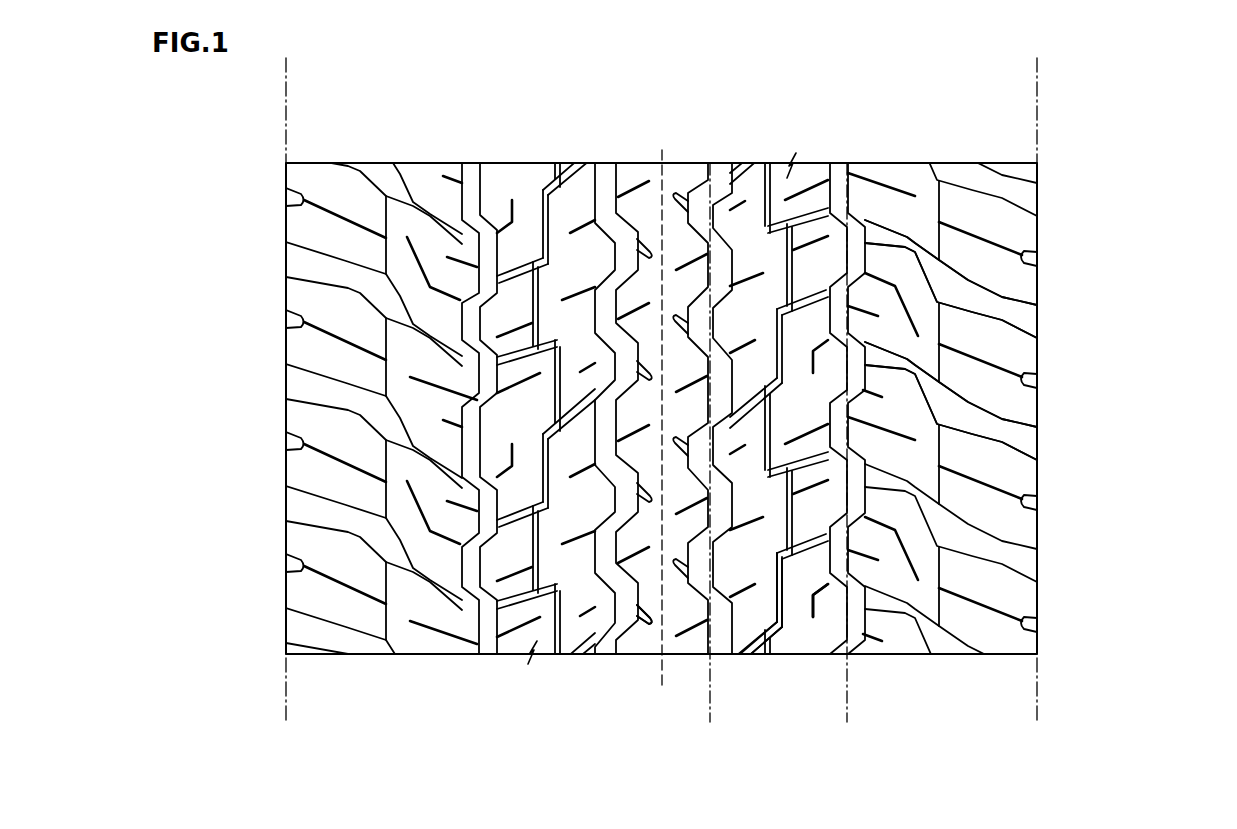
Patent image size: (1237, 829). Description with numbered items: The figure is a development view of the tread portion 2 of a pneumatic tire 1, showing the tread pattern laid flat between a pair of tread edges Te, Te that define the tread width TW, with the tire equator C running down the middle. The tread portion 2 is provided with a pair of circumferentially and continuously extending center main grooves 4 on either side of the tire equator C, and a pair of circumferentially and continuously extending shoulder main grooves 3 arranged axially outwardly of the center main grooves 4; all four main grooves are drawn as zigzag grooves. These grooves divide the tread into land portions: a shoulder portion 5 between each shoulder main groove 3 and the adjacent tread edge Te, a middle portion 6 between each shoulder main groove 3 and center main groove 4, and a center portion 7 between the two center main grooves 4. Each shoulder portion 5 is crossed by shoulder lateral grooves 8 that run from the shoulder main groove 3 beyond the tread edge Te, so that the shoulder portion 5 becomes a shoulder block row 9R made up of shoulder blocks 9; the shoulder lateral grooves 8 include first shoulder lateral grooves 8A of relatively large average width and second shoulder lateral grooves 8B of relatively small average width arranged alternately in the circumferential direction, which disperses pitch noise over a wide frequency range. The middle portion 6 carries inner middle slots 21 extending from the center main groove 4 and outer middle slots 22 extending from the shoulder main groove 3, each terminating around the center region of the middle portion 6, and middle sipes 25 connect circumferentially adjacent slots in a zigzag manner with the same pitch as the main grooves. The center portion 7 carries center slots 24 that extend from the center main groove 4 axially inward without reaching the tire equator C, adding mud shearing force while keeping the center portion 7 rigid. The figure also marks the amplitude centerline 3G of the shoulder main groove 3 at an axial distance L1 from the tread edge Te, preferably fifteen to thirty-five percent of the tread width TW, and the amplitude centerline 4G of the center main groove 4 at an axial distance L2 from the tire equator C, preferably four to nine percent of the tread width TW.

The pneumatic tire 1 is at (1112, 158).
The tread portion 2 is at (736, 375).
The shoulder main groove 3 is at (483, 176).
The center main groove 4 is at (607, 178).
The shoulder portion 5 is at (661, 414).
The middle portion 6 is at (582, 135).
The center portion 7 is at (708, 135).
The shoulder lateral groove 8 is at (1014, 340).
The first shoulder lateral groove 8A is at (1003, 300).
The second shoulder lateral groove 8B is at (1003, 428).
The shoulder block 9 is at (990, 276).
The shoulder block row 9R is at (381, 414).
The inner middle slot 21 is at (762, 632).
The outer middle slot 22 is at (813, 614).
The center slot 24 is at (646, 624).
The middle sipe 25 is at (799, 578).
The tire equator C is at (661, 410).
The tread edge Te is at (286, 150).
The tread width TW is at (1037, 67).
The amplitude centerline of the shoulder main groove 3G is at (849, 664).
The amplitude centerline of the center main groove 4G is at (712, 662).
The axial distance between tread edge and shoulder main groove centerline L1 is at (1024, 720).
The axial distance between tire equator and center main groove centerline L2 is at (700, 719).